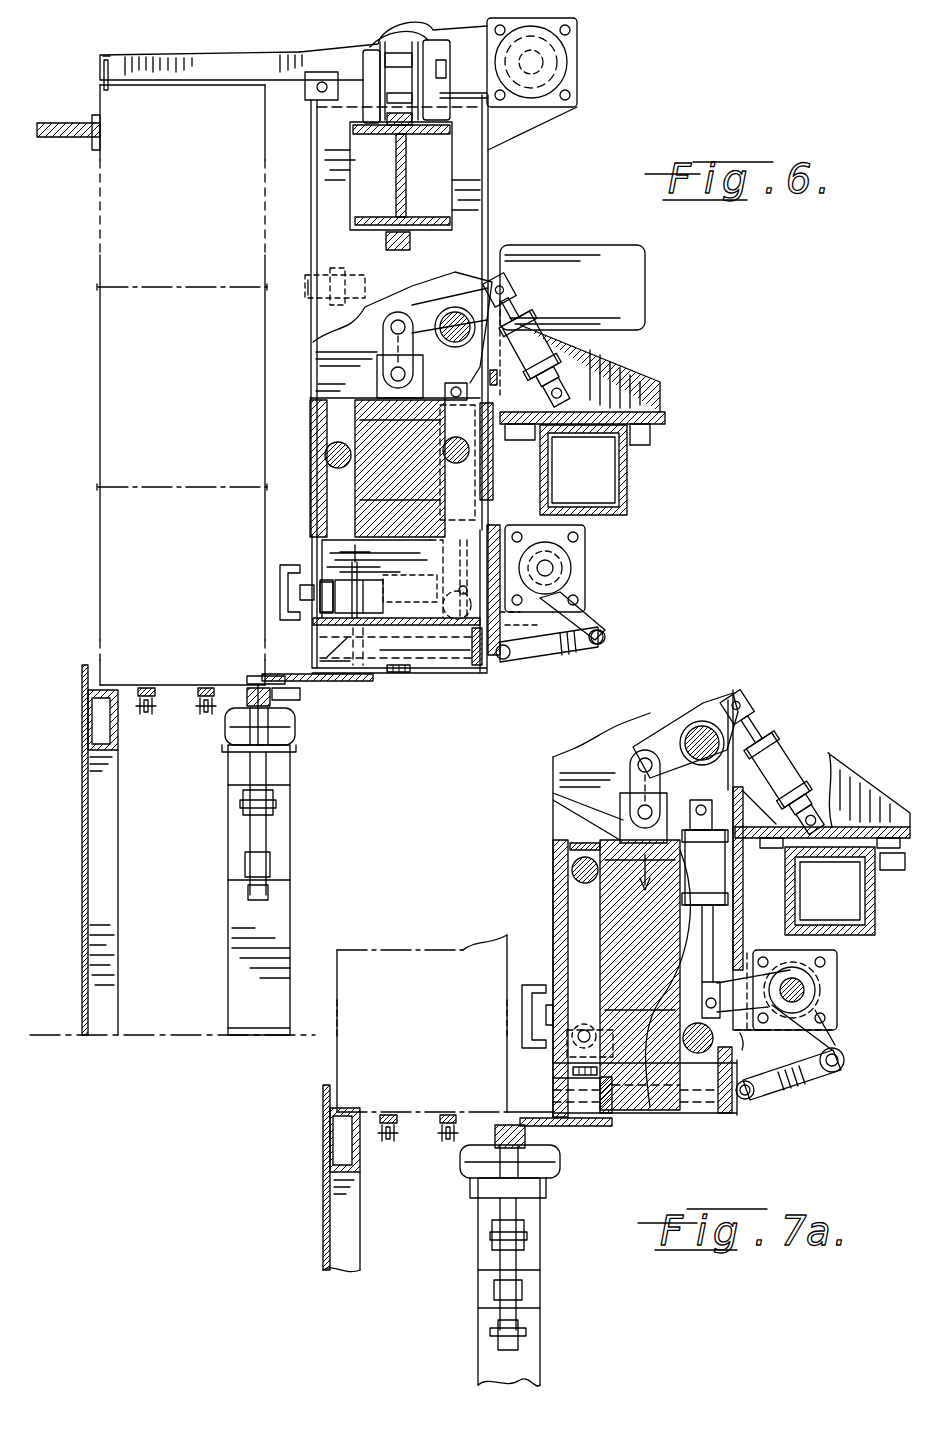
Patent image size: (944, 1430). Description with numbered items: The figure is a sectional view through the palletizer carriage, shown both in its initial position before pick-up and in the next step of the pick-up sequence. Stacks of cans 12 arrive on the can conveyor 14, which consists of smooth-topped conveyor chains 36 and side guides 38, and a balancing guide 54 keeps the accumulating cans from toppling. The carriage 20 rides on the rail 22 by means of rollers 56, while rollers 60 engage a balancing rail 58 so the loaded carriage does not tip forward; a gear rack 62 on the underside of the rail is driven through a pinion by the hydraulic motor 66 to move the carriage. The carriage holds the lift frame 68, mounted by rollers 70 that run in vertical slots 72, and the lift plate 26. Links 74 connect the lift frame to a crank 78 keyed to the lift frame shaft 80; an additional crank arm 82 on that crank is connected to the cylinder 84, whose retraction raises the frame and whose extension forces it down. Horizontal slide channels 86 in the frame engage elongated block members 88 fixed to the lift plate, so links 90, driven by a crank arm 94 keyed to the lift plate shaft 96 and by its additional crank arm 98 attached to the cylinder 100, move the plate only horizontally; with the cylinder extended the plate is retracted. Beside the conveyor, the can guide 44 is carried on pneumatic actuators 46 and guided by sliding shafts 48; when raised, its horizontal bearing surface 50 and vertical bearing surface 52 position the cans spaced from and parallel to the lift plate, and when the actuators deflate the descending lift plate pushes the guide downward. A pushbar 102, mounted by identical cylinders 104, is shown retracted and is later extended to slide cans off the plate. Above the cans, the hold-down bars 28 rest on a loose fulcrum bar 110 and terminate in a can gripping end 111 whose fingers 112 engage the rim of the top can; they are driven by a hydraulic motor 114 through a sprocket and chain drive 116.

In FIG. 6, the cans 12 is at (188, 370).
In FIG. 7A, the cans 12 is at (430, 1035).
In FIG. 6, the can conveyor 14 is at (72, 665).
In FIG. 7A, the can conveyor 14 is at (322, 1142).
In FIG. 6, the carriage 20 is at (508, 186).
In FIG. 7A, the carriage 20 is at (748, 905).
In FIG. 6, the rail 22 is at (405, 185).
In FIG. 6, the lift plate 26 is at (348, 682).
In FIG. 7A, the lift plate 26 is at (585, 1128).
In FIG. 6, the hold-down bars 28 is at (215, 55).
In FIG. 6, the conveyor chains 36 is at (200, 688).
In FIG. 6, the side guides 38 is at (82, 682).
In FIG. 7A, the side guides 38 is at (322, 1090).
In FIG. 6, the can guide 44 is at (282, 700).
In FIG. 7A, the can guide 44 is at (495, 1130).
In FIG. 6, the pneumatic actuators 46 is at (225, 725).
In FIG. 7A, the pneumatic actuators 46 is at (462, 1160).
In FIG. 6, the sliding shafts 48 is at (248, 778).
In FIG. 7A, the sliding shafts 48 is at (495, 1205).
In FIG. 6, the horizontal bearing surface 50 is at (250, 685).
In FIG. 6, the vertical bearing surface 52 is at (255, 686).
In FIG. 6, the balancing guide 54 is at (92, 120).
In FIG. 6, the rollers 56 is at (398, 55).
In FIG. 6, the balancing rail 58 is at (628, 475).
In FIG. 7A, the balancing rail 58 is at (875, 936).
In FIG. 6, the rollers 60 is at (552, 448).
In FIG. 7A, the rollers 60 is at (800, 862).
In FIG. 6, the gear rack 62 is at (415, 240).
In FIG. 6, the hydraulic motor 66 is at (646, 280).
In FIG. 6, the lift frame 68 is at (330, 392).
In FIG. 7A, the lift frame 68 is at (560, 800).
In FIG. 6, the rollers 70 is at (365, 455).
In FIG. 7A, the rollers 70 is at (553, 858).
In FIG. 6, the vertical slots 72 is at (325, 460).
In FIG. 7A, the vertical slots 72 is at (553, 897).
In FIG. 6, the links 74 is at (383, 340).
In FIG. 7A, the links 74 is at (630, 775).
In FIG. 6, the crank 78 is at (413, 310).
In FIG. 7A, the crank 78 is at (650, 743).
In FIG. 6, the lift frame shaft 80 is at (448, 346).
In FIG. 7A, the lift frame shaft 80 is at (692, 722).
In FIG. 6, the crank arm 82 is at (512, 290).
In FIG. 7A, the crank arm 82 is at (730, 688).
In FIG. 6, the cylinder 84 is at (545, 322).
In FIG. 7A, the cylinder 84 is at (790, 755).
In FIG. 7A, the slide channels 86 is at (553, 1090).
In FIG. 6, the elongated block members 88 is at (420, 672).
In FIG. 7A, the elongated block members 88 is at (645, 1112).
In FIG. 6, the links 90 is at (535, 658).
In FIG. 7A, the links 90 is at (800, 1085).
In FIG. 6, the crank arm 94 is at (600, 620).
In FIG. 7A, the crank arm 94 is at (840, 1050).
In FIG. 6, the lift plate shaft 96 is at (556, 562).
In FIG. 7A, the lift plate shaft 96 is at (805, 990).
In FIG. 6, the crank arm 98 is at (512, 608).
In FIG. 7A, the crank arm 98 is at (742, 1050).
In FIG. 6, the cylinder 100 is at (432, 485).
In FIG. 7A, the cylinder 100 is at (675, 915).
In FIG. 6, the pushbar 102 is at (282, 590).
In FIG. 7A, the pushbar 102 is at (525, 1010).
In FIG. 6, the cylinders 104 is at (322, 578).
In FIG. 6, the loose fulcrum bar 110 is at (315, 100).
In FIG. 6, the can gripping end 111 is at (115, 54).
In FIG. 6, the fingers 112 is at (104, 78).
In FIG. 6, the hydraulic motor 114 is at (565, 50).
In FIG. 6, the sprocket and chain drive 116 is at (465, 32).